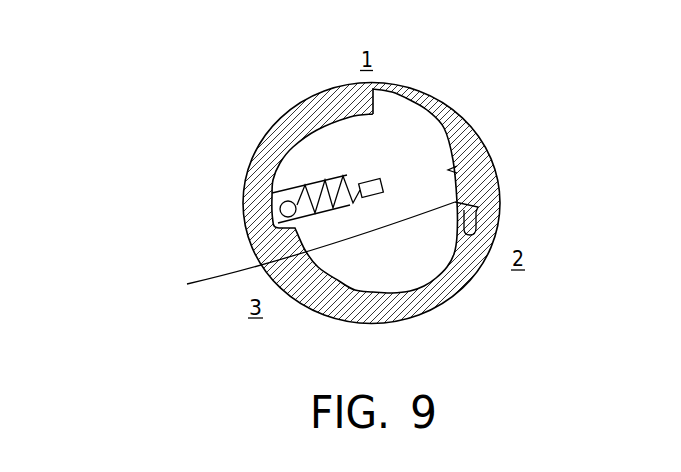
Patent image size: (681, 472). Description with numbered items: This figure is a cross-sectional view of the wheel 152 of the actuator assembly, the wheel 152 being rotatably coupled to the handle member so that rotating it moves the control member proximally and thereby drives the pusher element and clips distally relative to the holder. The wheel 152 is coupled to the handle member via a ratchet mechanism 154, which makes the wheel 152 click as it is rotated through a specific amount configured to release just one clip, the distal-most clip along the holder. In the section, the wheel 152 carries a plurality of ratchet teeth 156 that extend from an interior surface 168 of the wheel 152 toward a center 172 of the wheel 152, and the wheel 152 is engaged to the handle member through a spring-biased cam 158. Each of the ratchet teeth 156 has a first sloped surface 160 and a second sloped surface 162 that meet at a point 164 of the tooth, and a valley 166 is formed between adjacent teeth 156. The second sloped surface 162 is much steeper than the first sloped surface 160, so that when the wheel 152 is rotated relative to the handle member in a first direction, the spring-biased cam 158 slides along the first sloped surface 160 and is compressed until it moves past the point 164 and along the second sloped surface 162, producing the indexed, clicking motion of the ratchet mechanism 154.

The wheel 152 is at (190, 170).
The ratchet mechanism 154 is at (312, 152).
The ratchet teeth 156 is at (295, 228).
The spring-biased cam 158 is at (296, 194).
The first sloped surface 160 is at (450, 168).
The second sloped surface 162 is at (478, 233).
The point 164 is at (462, 250).
The valley 166 is at (375, 88).
The interior surface 168 is at (348, 268).
The center 172 is at (383, 187).